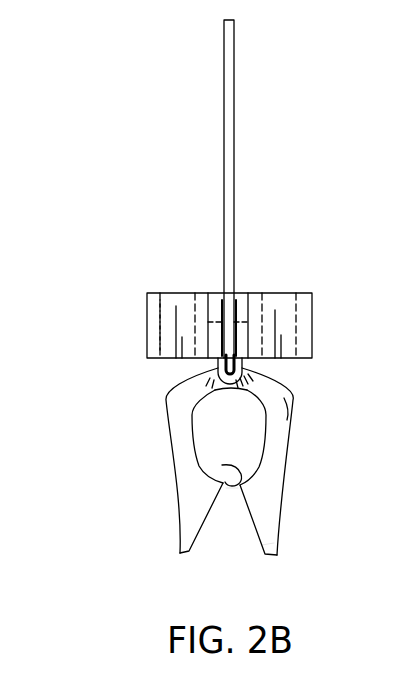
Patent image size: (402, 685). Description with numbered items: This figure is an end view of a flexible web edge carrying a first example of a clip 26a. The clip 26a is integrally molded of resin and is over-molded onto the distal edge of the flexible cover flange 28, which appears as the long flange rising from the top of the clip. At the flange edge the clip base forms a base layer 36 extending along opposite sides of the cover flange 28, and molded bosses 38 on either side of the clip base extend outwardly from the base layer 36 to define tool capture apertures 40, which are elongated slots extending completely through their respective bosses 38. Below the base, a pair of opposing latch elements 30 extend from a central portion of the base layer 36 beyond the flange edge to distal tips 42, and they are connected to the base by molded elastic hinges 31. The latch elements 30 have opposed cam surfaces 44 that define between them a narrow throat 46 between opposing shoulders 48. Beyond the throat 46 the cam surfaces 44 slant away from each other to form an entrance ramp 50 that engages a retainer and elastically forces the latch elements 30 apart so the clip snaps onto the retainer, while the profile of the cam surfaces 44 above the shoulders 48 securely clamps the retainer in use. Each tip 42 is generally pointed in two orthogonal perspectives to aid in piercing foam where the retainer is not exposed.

The cover flange 28 is at (234, 70).
The base layer 36 is at (240, 296).
The molded bosses 38 is at (312, 325).
The tool capture apertures 40 is at (157, 327).
The clip 26a is at (112, 370).
The latch elements 30 is at (170, 421).
The elastic hinges 31 is at (252, 381).
The shoulders 48 is at (222, 465).
The cam surfaces 44 is at (197, 537).
The distal tips 42 is at (278, 554).
The entrance ramp 50 is at (266, 538).
The throat 46 is at (229, 502).